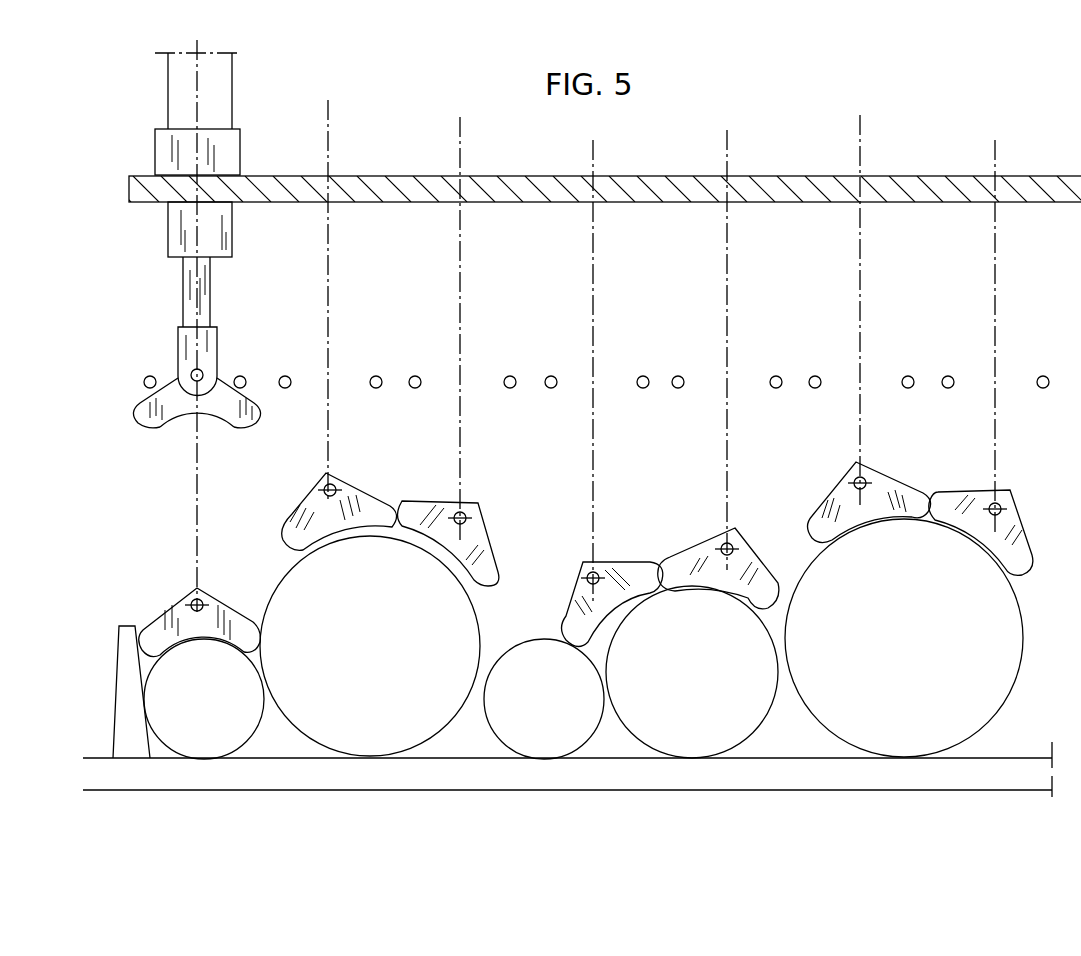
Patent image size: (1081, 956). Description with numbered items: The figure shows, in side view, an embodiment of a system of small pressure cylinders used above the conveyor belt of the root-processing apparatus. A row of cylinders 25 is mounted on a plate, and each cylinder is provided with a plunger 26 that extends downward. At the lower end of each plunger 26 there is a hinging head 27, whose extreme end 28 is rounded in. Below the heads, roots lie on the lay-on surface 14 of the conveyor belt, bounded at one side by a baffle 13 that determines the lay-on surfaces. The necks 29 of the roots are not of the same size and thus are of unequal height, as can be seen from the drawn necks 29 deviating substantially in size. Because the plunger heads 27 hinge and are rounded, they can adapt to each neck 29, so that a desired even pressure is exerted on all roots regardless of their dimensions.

The baffle 13 is at (127, 658).
The lay-on surface 14 is at (733, 775).
The cylinder 25 is at (220, 86).
The plunger 26 is at (203, 292).
The hinging head 27 is at (152, 403).
The extreme end 28 is at (190, 413).
The neck 29 is at (237, 733).